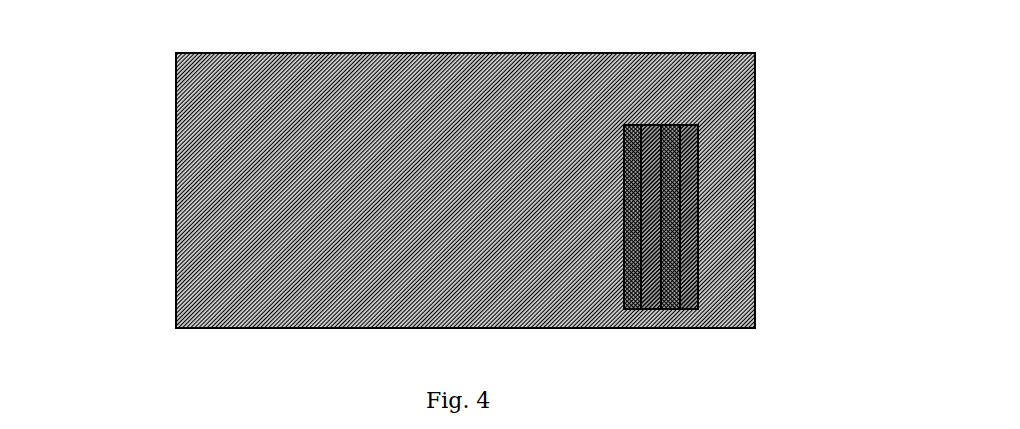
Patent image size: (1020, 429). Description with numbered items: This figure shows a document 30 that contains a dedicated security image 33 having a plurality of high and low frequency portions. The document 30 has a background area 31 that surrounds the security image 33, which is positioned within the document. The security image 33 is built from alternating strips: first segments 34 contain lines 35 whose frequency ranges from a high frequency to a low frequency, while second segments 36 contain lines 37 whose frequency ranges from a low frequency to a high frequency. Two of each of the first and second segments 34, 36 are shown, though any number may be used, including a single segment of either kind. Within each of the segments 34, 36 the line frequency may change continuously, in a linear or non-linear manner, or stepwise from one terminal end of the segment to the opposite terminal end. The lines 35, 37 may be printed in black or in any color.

The document 30 is at (168, 138).
The background area 31 is at (190, 207).
The dedicated security image 33 is at (692, 117).
The first segments 34 is at (682, 131).
The lines 35 is at (682, 183).
The second segments 36 is at (672, 248).
The lines 37 is at (668, 263).